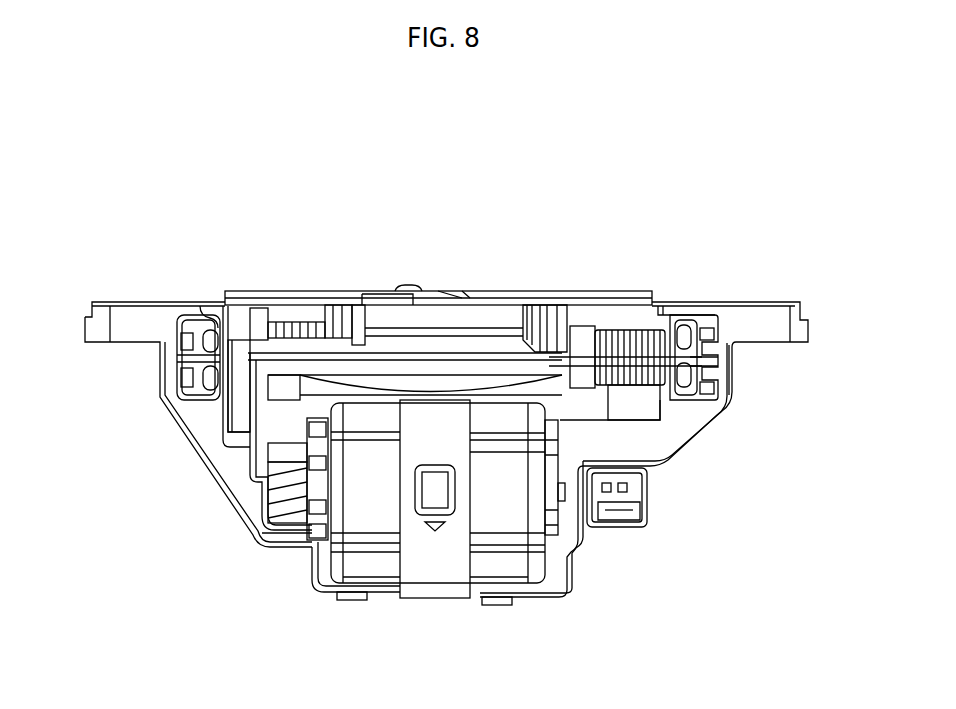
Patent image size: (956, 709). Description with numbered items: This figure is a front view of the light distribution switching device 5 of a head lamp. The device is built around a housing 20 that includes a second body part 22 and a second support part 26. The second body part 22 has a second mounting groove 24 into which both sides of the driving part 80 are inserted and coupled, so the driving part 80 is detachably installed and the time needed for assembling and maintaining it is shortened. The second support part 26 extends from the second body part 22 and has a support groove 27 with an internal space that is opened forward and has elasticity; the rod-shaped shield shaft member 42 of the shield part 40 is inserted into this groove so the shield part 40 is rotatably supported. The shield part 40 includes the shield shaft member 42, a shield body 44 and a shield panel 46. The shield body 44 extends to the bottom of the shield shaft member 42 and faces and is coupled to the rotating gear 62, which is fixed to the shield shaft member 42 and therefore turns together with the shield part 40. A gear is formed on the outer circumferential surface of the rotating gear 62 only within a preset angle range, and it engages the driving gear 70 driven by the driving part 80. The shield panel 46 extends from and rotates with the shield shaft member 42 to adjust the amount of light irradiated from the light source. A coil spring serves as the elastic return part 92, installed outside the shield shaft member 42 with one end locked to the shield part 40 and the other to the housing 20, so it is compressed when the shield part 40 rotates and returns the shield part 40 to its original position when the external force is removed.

The light distribution switching device 5 is at (420, 184).
The housing 20 is at (150, 455).
The second body part 22 is at (250, 554).
The second mounting groove 24 is at (567, 556).
The second support part 26 is at (741, 372).
The support groove 27 is at (702, 402).
The shield part 40 is at (475, 278).
The shield shaft member 42 is at (193, 362).
The shield body 44 is at (262, 392).
The shield panel 46 is at (335, 305).
The rotating gear 62 is at (292, 418).
The driving gear 70 is at (275, 496).
The driving part 80 is at (375, 515).
The elastic return part 92 is at (619, 345).